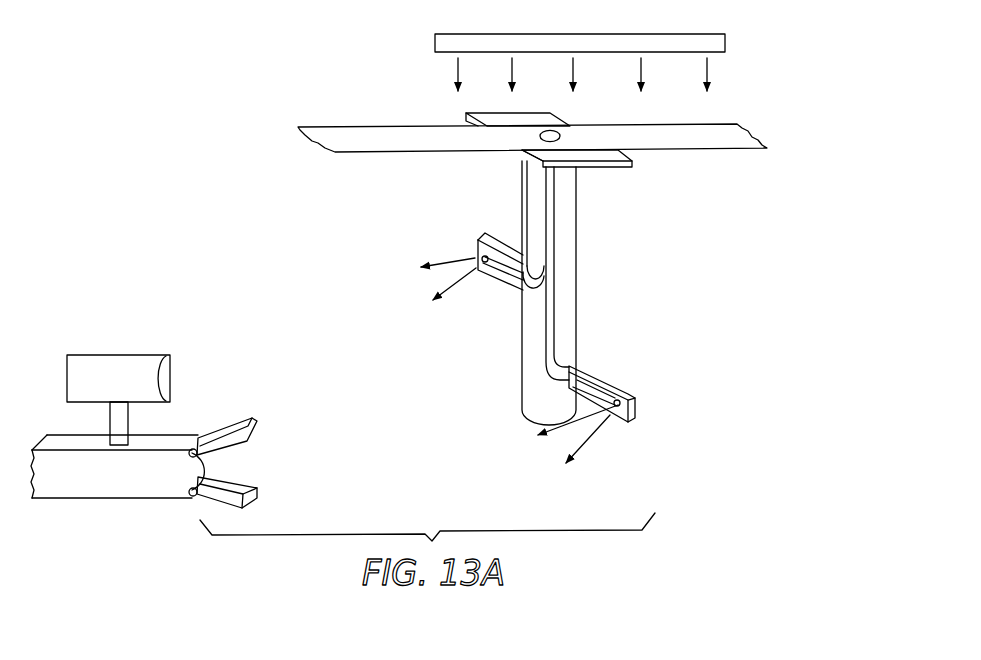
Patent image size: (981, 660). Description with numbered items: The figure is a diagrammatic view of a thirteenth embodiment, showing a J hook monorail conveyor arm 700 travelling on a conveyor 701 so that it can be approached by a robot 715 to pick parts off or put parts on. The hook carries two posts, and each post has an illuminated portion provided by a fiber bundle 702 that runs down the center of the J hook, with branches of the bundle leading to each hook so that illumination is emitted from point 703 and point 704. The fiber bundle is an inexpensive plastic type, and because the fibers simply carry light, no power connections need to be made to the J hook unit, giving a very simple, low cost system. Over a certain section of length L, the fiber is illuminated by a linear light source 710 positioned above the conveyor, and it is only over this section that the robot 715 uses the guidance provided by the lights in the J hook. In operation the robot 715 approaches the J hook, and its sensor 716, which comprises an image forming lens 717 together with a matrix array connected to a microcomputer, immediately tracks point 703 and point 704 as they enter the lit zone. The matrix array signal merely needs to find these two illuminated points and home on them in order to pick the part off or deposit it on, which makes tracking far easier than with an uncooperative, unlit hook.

The linear light source 710 is at (722, 40).
The conveyor 701 is at (735, 136).
The J hook monorail conveyor arm 700 is at (575, 232).
The fiber bundle 702 is at (557, 300).
The illuminated point 703 is at (478, 239).
The illuminated point 704 is at (635, 397).
The robot 715 is at (118, 508).
The sensor 716 is at (135, 355).
The image forming lens 717 is at (166, 377).